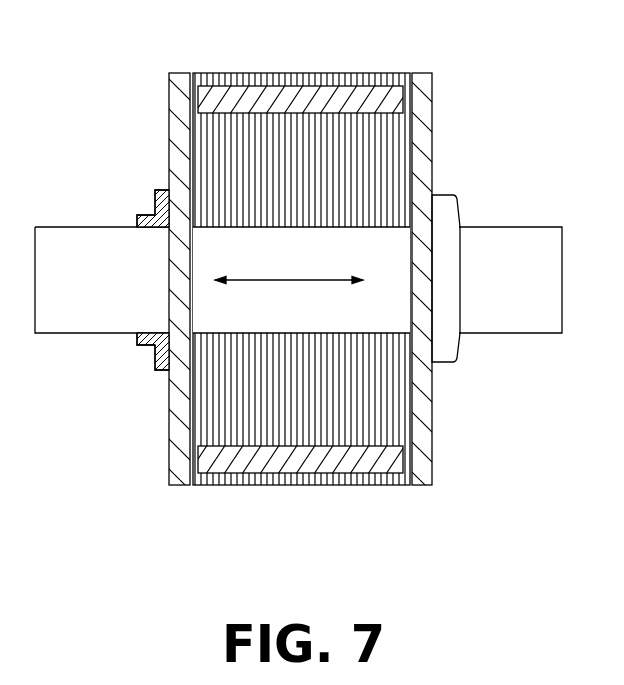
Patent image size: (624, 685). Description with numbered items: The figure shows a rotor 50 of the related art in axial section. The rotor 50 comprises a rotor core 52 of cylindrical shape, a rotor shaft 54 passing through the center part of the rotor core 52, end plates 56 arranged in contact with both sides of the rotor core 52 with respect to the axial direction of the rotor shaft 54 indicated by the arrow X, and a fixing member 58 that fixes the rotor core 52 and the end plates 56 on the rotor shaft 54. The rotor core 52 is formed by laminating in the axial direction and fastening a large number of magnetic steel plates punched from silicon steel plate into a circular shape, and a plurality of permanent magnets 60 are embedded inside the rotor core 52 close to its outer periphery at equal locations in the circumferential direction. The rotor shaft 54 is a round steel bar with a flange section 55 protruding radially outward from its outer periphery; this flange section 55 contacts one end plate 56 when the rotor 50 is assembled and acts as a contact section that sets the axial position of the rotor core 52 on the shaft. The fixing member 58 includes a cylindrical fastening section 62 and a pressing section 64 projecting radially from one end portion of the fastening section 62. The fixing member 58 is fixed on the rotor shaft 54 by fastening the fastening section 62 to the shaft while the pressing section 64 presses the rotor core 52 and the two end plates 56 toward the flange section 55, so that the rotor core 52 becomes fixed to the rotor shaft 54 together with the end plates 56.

The rotor 50 is at (313, 274).
The rotor core 52 is at (372, 80).
The rotor shaft 54 is at (514, 222).
The flange section 55 is at (442, 196).
The end plate 56 is at (169, 120).
The fixing member 58 is at (101, 256).
The permanent magnet 60 is at (310, 97).
The fastening section 62 is at (150, 215).
The pressing section 64 is at (160, 197).